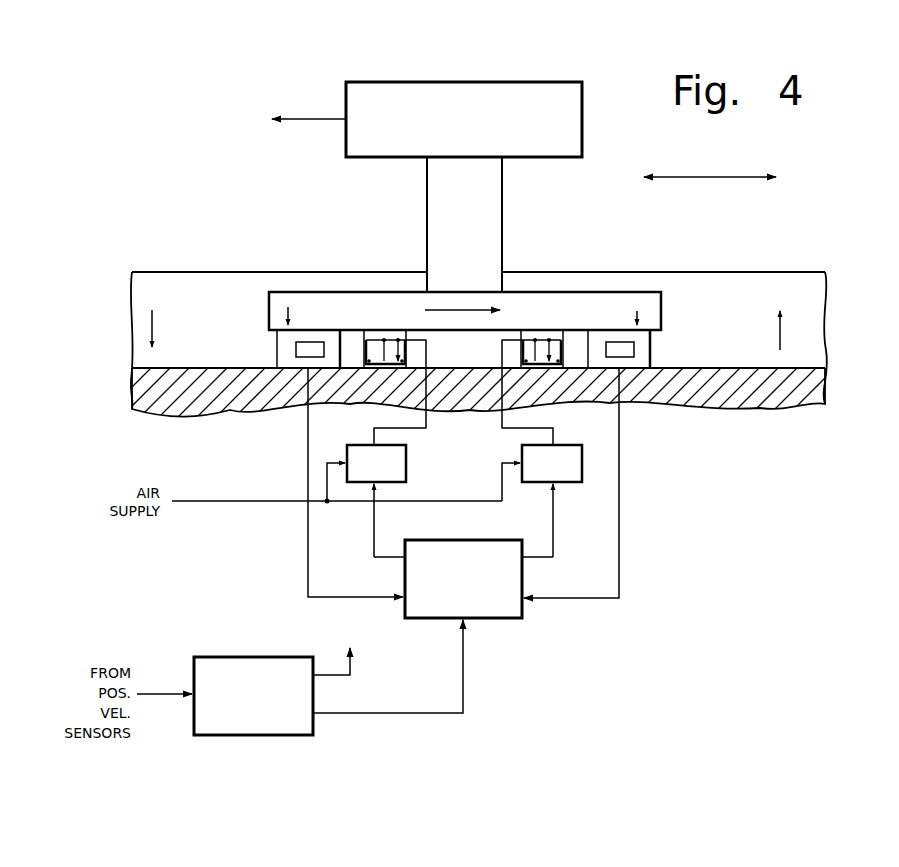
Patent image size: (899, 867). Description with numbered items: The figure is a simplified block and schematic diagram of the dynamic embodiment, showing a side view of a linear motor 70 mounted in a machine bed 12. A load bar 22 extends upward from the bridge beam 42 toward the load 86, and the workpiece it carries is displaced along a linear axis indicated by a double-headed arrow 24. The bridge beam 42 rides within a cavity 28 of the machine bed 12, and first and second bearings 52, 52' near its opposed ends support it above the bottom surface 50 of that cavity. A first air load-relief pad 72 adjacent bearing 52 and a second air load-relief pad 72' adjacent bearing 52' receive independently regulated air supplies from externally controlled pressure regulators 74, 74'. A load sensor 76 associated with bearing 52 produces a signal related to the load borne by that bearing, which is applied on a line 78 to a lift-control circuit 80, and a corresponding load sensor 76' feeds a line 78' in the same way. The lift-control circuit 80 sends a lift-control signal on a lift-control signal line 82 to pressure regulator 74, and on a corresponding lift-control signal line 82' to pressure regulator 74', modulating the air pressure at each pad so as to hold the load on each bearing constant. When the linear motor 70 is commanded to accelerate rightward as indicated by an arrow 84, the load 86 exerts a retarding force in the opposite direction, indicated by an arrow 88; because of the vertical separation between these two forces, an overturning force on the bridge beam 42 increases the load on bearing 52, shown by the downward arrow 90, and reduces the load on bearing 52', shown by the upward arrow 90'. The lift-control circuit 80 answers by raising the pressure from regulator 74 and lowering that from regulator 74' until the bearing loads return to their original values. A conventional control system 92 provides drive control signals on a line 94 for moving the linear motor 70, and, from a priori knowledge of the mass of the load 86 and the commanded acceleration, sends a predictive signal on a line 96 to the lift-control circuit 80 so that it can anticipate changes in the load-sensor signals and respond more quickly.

The machine bed 12 is at (800, 396).
The load bar 22 is at (503, 208).
The double-headed arrow 24 is at (718, 177).
The cavity 28 is at (738, 297).
The bridge beam 42 is at (625, 292).
The bottom surface 50 is at (733, 367).
The bearing 52 is at (281, 349).
The bearing 52' is at (648, 349).
The linear motor 70 is at (288, 236).
The air load-relief pad 72 is at (385, 332).
The air load-relief pad 72' is at (558, 332).
The externally controlled pressure regulator 74 is at (396, 501).
The externally controlled pressure regulator 74' is at (578, 501).
The load sensor 76 is at (319, 327).
The load sensor 76' is at (657, 338).
The line 78 is at (324, 482).
The line 78' is at (606, 483).
The lift-control circuit 80 is at (522, 574).
The lift-control signal line 82 is at (400, 435).
The lift-control signal line 82' is at (554, 443).
The arrow 84 is at (458, 310).
The load 86 is at (555, 82).
The arrow 88 is at (304, 119).
The downward arrow 90 is at (176, 328).
The upward arrow 90' is at (829, 330).
The control system 92 is at (253, 655).
The line 94 is at (352, 667).
The line 96 is at (465, 693).